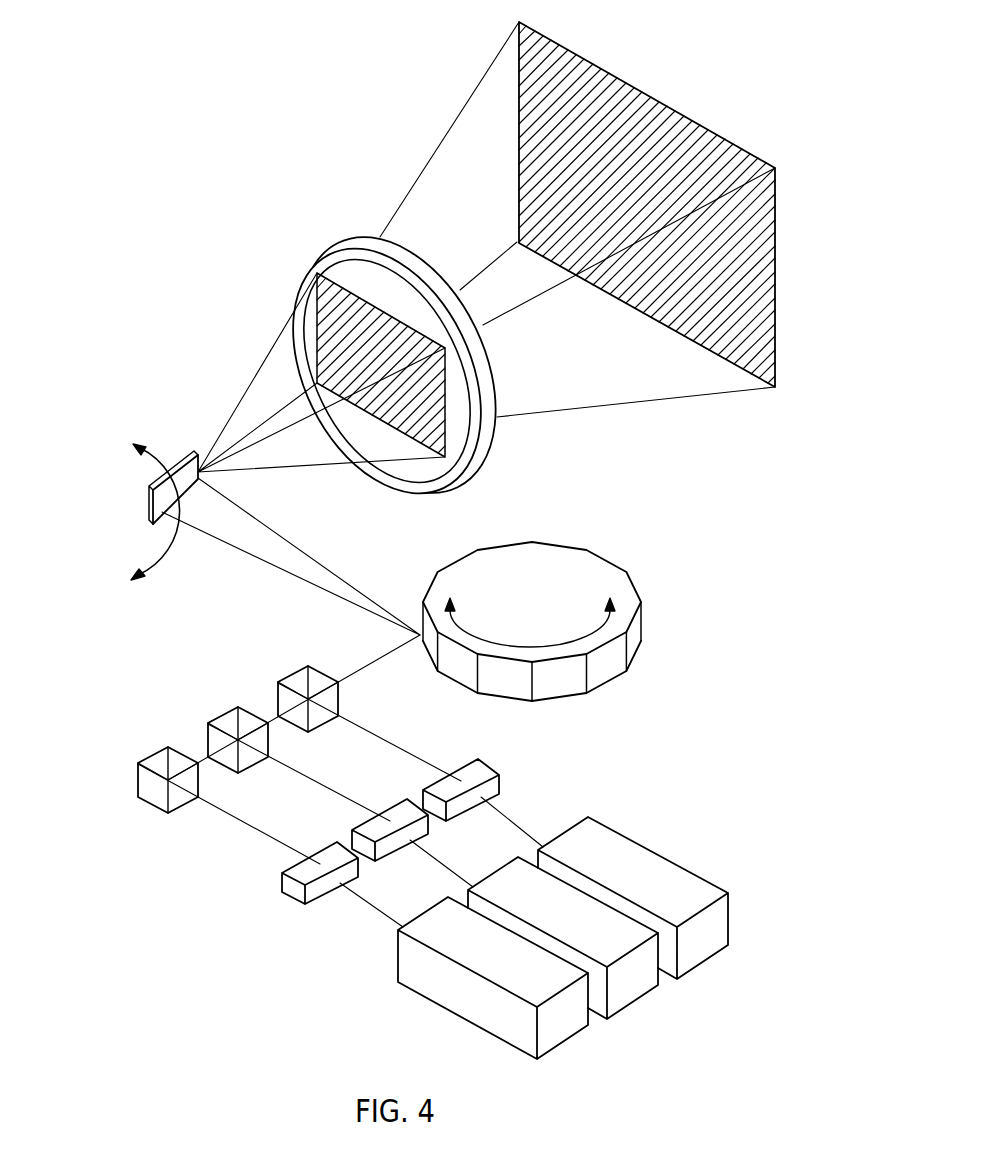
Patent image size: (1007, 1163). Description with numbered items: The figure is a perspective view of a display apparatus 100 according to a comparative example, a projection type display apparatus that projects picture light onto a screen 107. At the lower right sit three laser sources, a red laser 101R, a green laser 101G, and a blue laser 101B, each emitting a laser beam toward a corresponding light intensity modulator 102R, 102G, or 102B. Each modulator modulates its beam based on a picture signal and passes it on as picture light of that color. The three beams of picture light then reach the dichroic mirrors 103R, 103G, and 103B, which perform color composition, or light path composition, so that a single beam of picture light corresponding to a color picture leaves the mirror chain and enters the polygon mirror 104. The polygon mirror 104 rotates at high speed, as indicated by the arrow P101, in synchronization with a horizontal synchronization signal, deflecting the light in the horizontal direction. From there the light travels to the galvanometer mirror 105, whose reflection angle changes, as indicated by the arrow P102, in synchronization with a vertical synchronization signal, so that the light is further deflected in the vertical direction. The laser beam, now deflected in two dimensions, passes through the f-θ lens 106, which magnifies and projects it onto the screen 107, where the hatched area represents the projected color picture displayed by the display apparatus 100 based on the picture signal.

The display apparatus 100 is at (184, 933).
The red laser 101R is at (567, 1030).
The green laser 101G is at (630, 990).
The blue laser 101B is at (702, 947).
The light intensity modulator 102R is at (320, 880).
The light intensity modulator 102G is at (390, 843).
The light intensity modulator 102B is at (462, 803).
The dichroic mirror 103R is at (153, 750).
The dichroic mirror 103G is at (223, 712).
The dichroic mirror 103B is at (293, 670).
The polygon mirror 104 is at (563, 541).
The arrow P101 is at (552, 645).
The galvanometer mirror 105 is at (148, 504).
The arrow P102 is at (165, 456).
The f-θ lens 106 is at (330, 250).
The screen 107 is at (652, 97).